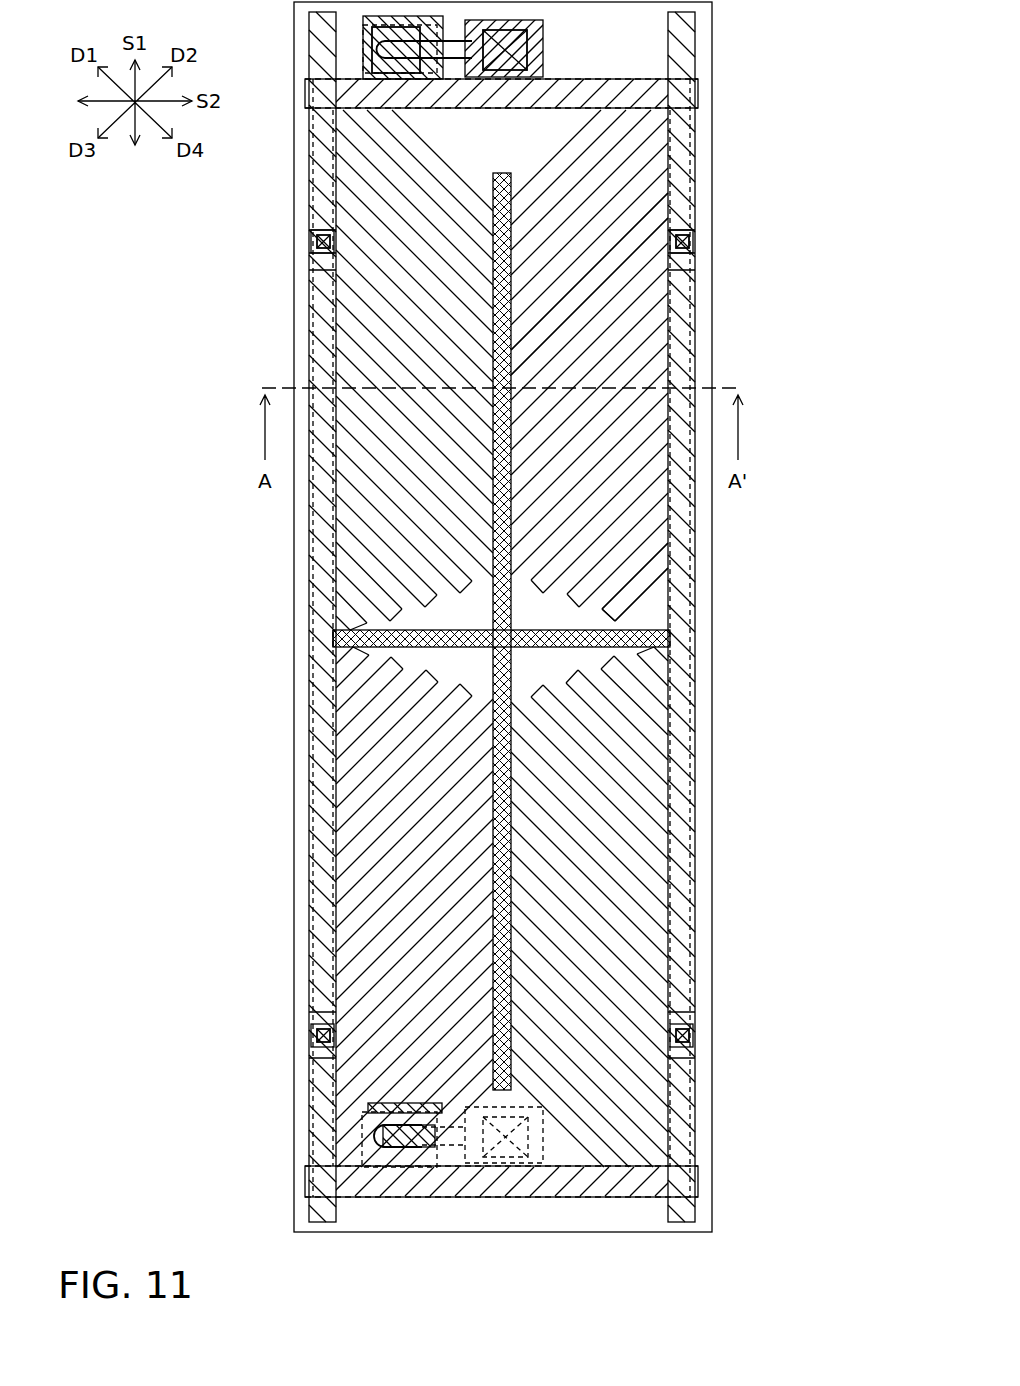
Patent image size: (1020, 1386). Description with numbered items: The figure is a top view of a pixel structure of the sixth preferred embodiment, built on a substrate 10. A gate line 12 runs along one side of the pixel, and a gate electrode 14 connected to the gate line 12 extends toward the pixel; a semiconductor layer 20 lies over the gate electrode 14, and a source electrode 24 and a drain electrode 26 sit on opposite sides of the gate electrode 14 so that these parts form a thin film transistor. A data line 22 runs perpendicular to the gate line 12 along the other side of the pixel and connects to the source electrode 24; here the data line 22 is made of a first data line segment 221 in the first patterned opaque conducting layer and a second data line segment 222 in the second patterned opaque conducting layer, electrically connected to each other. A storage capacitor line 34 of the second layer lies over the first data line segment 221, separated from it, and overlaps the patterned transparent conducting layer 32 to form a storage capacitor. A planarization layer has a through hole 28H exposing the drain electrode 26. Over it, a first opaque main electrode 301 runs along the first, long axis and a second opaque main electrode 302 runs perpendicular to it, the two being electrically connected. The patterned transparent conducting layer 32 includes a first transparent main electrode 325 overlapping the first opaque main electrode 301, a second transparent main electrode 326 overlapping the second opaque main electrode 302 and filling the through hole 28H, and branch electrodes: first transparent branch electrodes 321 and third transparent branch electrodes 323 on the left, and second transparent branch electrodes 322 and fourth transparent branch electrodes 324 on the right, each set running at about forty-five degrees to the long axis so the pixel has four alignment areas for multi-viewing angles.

The substrate 10 is at (712, 1213).
The gate line 12 is at (640, 84).
The gate electrode 14 is at (450, 1157).
The semiconductor layer 20 is at (440, 1189).
The data line 22 is at (477, 617).
The first data line segment 221 is at (322, 1032).
The second data line segment 222 is at (318, 223).
The source electrode 24 is at (385, 1157).
The drain electrode 26 is at (508, 1165).
The through hole 28H is at (503, 1170).
The first opaque main electrode 301 is at (500, 355).
The second opaque main electrode 302 is at (338, 642).
The patterned transparent conducting layer 32 is at (504, 638).
The first transparent branch electrodes 321 is at (352, 203).
The second transparent branch electrodes 322 is at (660, 185).
The third transparent branch electrodes 323 is at (350, 1072).
The fourth transparent branch electrodes 324 is at (655, 975).
The first transparent main electrode 325 is at (540, 294).
The second transparent main electrode 326 is at (650, 607).
The storage capacitor line 34 is at (333, 640).